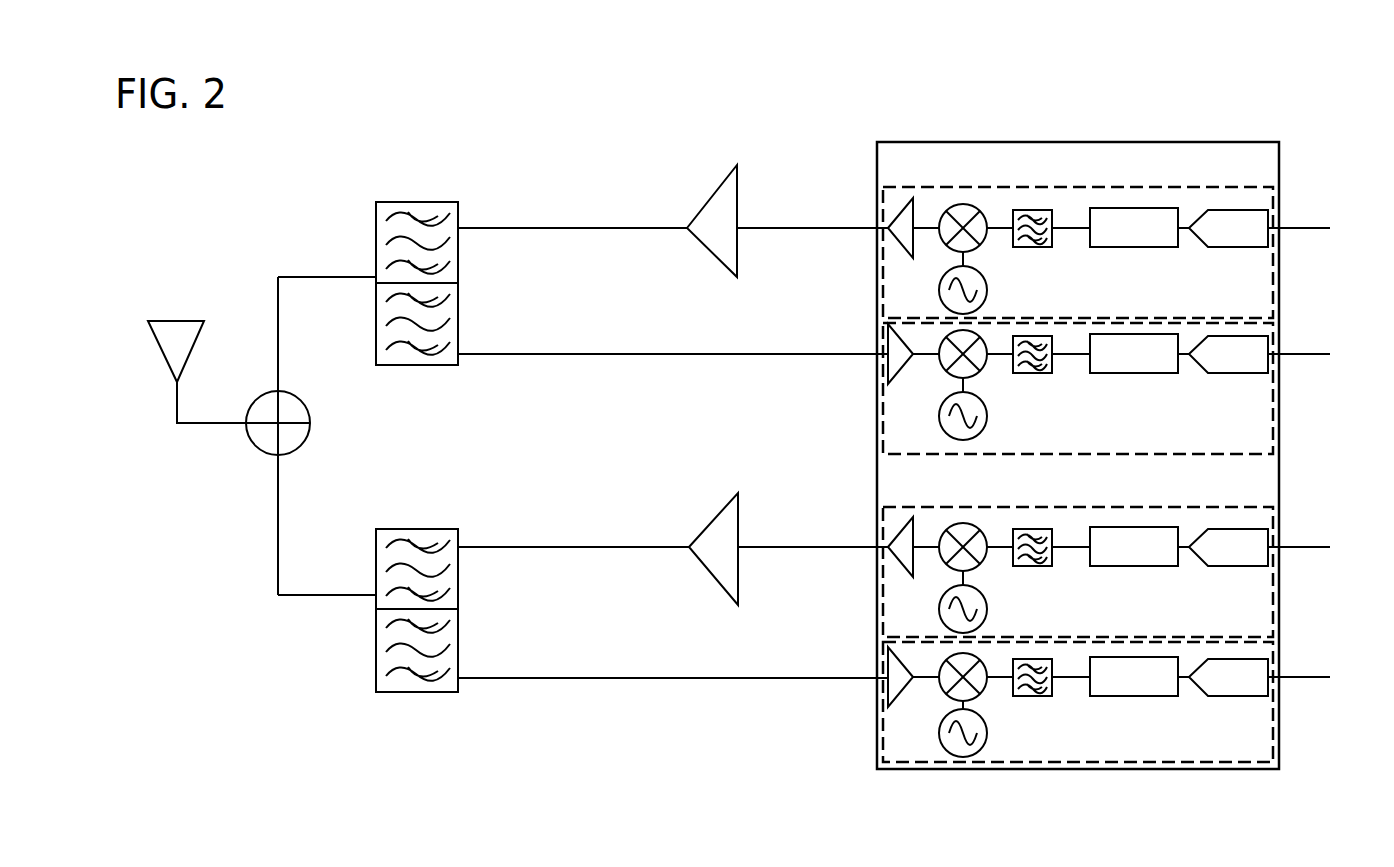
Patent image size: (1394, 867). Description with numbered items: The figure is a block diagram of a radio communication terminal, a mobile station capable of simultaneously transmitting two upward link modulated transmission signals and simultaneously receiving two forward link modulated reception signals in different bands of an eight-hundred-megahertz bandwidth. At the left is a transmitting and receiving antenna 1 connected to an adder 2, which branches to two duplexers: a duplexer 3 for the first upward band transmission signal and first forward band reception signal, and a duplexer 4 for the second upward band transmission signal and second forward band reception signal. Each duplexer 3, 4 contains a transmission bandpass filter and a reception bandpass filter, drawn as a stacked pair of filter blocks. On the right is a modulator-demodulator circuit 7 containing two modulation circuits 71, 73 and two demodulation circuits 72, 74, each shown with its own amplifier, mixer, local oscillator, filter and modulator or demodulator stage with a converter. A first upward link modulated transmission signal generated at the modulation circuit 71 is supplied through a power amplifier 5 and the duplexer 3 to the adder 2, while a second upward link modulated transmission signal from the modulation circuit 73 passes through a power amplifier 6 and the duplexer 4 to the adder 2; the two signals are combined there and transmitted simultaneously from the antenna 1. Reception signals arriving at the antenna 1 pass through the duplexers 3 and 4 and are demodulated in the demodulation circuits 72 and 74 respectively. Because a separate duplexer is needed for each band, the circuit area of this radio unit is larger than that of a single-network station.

The transmitting and receiving antenna 1 is at (157, 348).
The adder 2 is at (255, 447).
The duplexer 3 is at (458, 208).
The duplexer 4 is at (458, 529).
The power amplifier 5 is at (737, 185).
The power amplifier 6 is at (738, 513).
The modulator-demodulator circuit 7 is at (1188, 142).
The modulation circuit 71 is at (1273, 248).
The demodulation circuit 72 is at (1273, 385).
The modulation circuit 73 is at (1273, 588).
The demodulation circuit 74 is at (1273, 710).